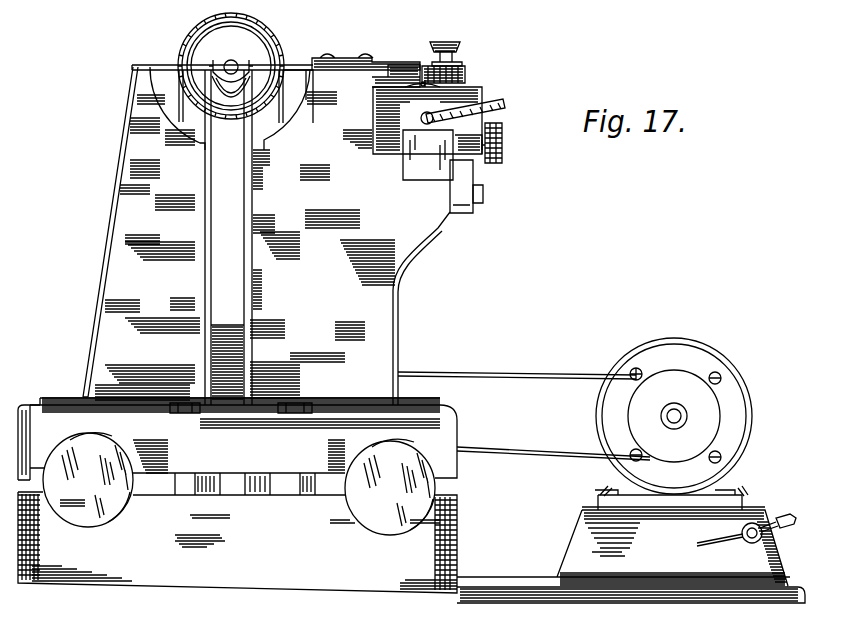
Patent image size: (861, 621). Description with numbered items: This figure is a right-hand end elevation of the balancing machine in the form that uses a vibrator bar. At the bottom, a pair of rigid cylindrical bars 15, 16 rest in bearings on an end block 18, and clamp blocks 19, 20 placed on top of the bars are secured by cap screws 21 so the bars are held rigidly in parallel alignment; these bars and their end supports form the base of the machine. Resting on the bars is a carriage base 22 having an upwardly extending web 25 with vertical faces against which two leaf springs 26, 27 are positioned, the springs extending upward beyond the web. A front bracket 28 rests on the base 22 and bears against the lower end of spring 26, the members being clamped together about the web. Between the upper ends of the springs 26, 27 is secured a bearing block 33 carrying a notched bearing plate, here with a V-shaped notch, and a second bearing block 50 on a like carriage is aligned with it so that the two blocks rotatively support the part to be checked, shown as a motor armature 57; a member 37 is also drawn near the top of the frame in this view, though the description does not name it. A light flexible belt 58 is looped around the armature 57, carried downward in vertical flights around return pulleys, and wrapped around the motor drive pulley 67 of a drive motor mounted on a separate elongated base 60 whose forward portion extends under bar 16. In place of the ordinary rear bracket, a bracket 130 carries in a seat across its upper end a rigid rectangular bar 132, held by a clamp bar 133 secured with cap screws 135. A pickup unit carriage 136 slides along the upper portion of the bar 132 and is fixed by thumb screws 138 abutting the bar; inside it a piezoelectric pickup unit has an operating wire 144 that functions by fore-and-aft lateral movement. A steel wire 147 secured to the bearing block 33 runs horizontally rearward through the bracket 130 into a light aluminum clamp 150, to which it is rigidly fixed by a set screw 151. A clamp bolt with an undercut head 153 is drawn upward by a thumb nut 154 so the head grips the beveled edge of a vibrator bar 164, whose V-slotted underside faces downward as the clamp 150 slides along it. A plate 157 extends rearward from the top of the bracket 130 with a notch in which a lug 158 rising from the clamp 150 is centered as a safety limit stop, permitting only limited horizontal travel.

The bar 15 is at (78, 508).
The bar 16 is at (367, 515).
The end block 18 is at (140, 575).
The clamp block 19 is at (241, 122).
The clamp block 20 is at (33, 412).
The cap screws 21 is at (300, 405).
The base 22 is at (55, 402).
The web 25 is at (225, 332).
The leaf spring 26 is at (213, 218).
The leaf spring 27 is at (247, 262).
The front bracket 28 is at (114, 264).
The bearing block 33 is at (228, 100).
The top bar 37 is at (165, 66).
The bearing block 50 is at (742, 415).
The motor armature 57 is at (212, 38).
The belt 58 is at (287, 108).
The base 60 is at (575, 545).
The motor drive pulley 67 is at (712, 425).
The bracket 130 is at (400, 312).
The bar 132 is at (420, 172).
The clamp bar 133 is at (462, 208).
The cap screws 135 is at (484, 196).
The pickup unit carriage 136 is at (390, 148).
The thumb screws 138 is at (503, 153).
The pickup unit operating wire 144 is at (422, 87).
The steel wire 147 is at (295, 66).
The clamp 150 is at (464, 70).
The set screw 151 is at (425, 78).
The head 153 is at (454, 89).
The thumb nut 154 is at (450, 44).
The plate 157 is at (345, 60).
The lug 158 is at (405, 64).
The vibrator bar 164 is at (372, 83).